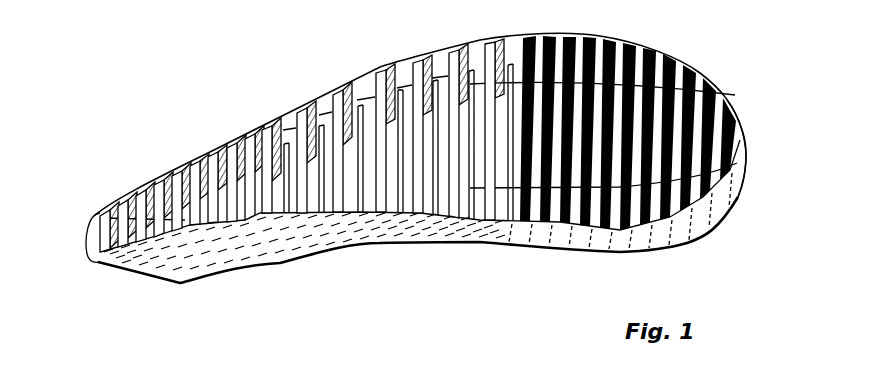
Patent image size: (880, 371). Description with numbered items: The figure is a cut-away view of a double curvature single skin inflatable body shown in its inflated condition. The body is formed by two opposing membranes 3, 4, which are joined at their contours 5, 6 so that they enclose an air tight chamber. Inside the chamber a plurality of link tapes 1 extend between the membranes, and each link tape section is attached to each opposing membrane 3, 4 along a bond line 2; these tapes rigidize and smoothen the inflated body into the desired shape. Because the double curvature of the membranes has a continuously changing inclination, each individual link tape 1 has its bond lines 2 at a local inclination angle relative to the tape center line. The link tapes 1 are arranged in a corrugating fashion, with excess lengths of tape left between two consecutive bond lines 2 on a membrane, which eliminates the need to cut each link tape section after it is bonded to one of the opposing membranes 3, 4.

The link tape 1 is at (453, 103).
The bond line 2 is at (250, 250).
The opposing membrane 3 is at (317, 97).
The opposing membrane 4 is at (690, 227).
The contour 5 is at (742, 132).
The contour 6 is at (84, 246).